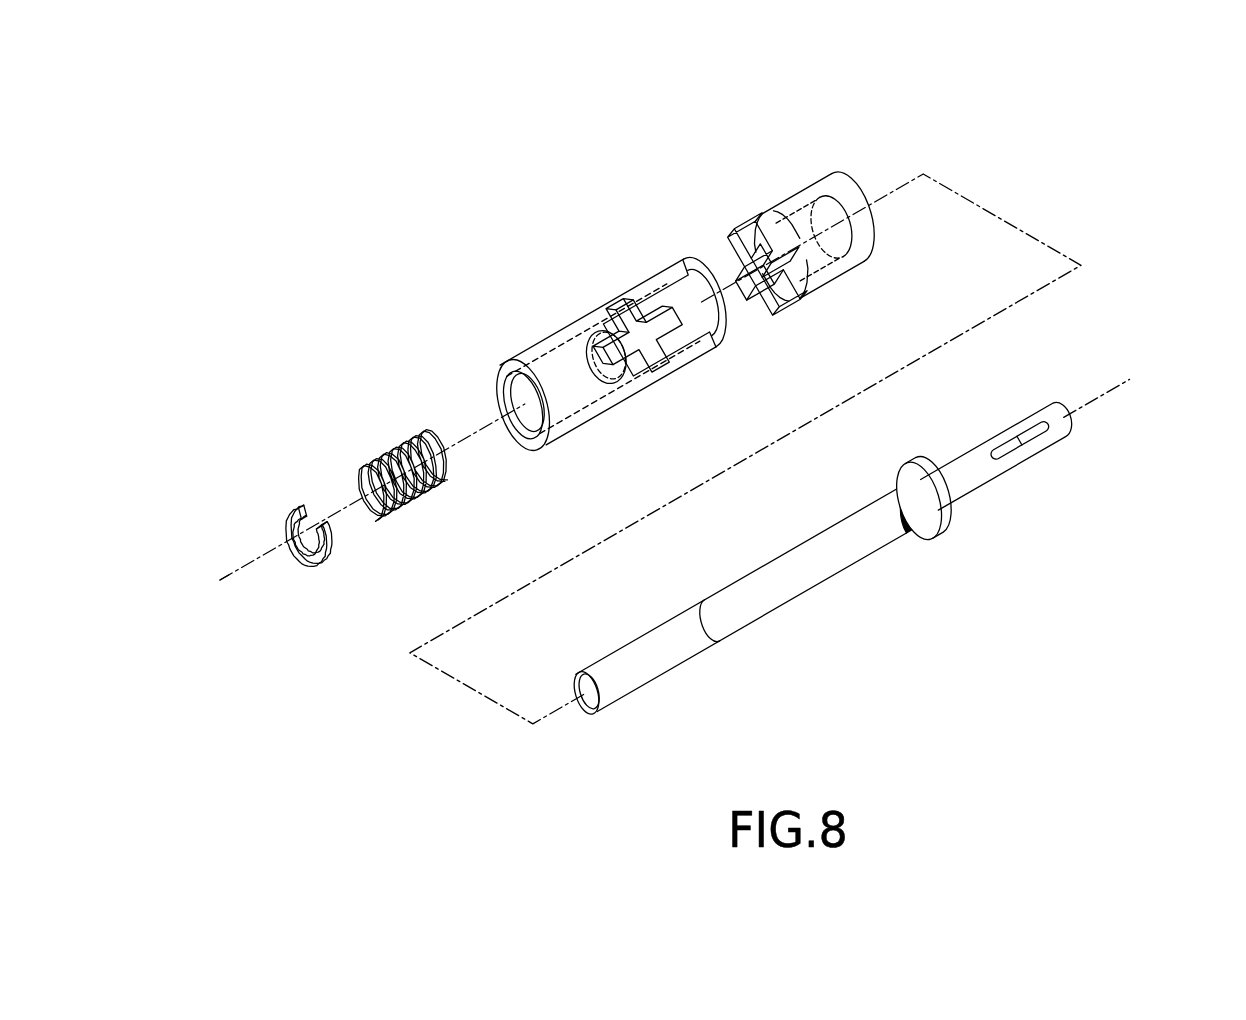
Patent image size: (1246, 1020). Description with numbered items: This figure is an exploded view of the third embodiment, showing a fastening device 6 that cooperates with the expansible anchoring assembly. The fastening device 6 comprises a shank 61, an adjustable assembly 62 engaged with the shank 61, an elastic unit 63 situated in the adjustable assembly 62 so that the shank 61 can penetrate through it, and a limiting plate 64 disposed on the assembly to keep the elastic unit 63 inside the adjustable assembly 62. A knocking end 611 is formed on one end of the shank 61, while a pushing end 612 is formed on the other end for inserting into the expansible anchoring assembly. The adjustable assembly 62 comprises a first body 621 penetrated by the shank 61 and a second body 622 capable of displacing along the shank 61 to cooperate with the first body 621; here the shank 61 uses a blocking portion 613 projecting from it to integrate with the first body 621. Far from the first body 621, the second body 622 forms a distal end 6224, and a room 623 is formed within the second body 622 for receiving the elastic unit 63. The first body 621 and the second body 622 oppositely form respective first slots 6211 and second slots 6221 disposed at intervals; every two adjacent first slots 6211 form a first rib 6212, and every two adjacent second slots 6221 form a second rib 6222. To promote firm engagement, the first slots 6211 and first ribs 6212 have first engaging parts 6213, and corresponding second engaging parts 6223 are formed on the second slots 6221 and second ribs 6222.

The fastening device 6 is at (282, 283).
The shank 61 is at (820, 598).
The knocking end 611 is at (1068, 422).
The pushing end 612 is at (585, 704).
The blocking portion 613 is at (950, 518).
The adjustable assembly 62 is at (540, 328).
The first body 621 is at (798, 188).
The first slots 6211 is at (792, 284).
The first rib 6212 is at (769, 302).
The first engaging parts 6213 is at (709, 292).
The second body 622 is at (590, 308).
The second slots 6221 is at (697, 332).
The second rib 6222 is at (721, 324).
The second engaging parts 6223 is at (668, 277).
The distal end 6224 is at (498, 376).
The room 623 is at (582, 388).
The elastic unit 63 is at (390, 447).
The limiting plate 64 is at (295, 507).